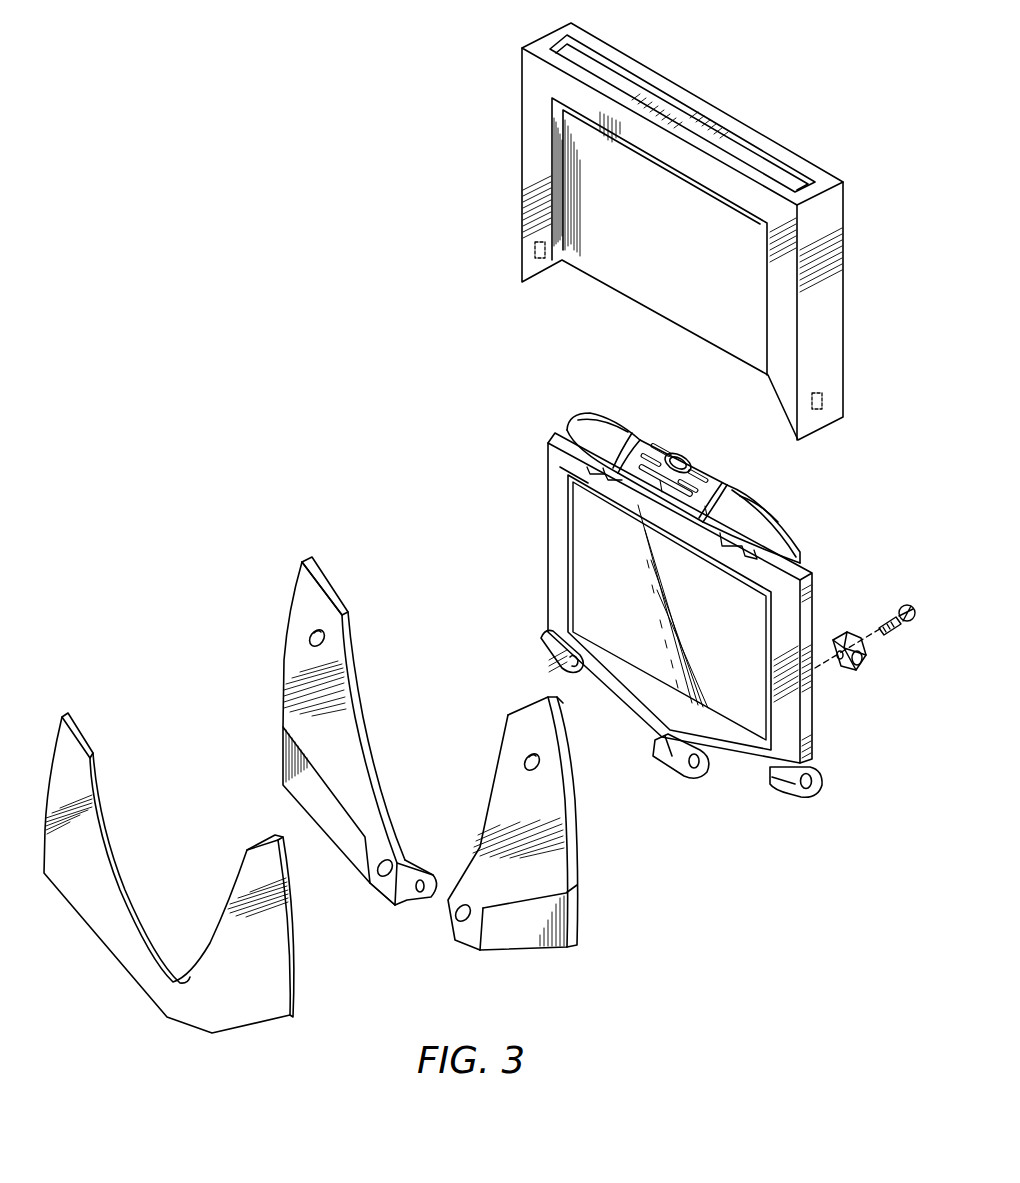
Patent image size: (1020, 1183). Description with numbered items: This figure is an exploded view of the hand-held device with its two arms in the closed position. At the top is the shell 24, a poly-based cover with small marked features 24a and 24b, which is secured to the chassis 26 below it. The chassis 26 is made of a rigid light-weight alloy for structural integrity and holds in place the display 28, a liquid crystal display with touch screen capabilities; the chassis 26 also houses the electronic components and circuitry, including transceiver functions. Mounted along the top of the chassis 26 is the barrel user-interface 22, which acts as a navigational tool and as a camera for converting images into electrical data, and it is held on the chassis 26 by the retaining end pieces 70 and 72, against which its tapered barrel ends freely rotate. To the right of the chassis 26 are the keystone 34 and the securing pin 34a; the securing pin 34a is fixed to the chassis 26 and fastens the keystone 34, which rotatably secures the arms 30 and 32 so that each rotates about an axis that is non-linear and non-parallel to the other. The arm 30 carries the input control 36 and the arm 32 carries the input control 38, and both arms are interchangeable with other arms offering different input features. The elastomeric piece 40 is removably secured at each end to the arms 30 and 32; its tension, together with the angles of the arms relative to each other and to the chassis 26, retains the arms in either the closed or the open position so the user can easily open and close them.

The barrel user-interface (BUI) 22 is at (687, 457).
The shell 24 is at (532, 125).
The housing mounting hole 24a is at (543, 262).
The housing mounting hole 24b is at (823, 407).
The chassis 26 is at (813, 608).
The display 28 is at (585, 570).
The arm 30 is at (575, 795).
The arm 32 is at (283, 645).
The keystone 34 is at (838, 672).
The securing pin 34a is at (900, 637).
The input control 36 is at (532, 937).
The input control 38 is at (303, 797).
The elastomeric piece 40 is at (113, 953).
The retaining end piece 70 is at (594, 428).
The retaining end piece 72 is at (753, 510).